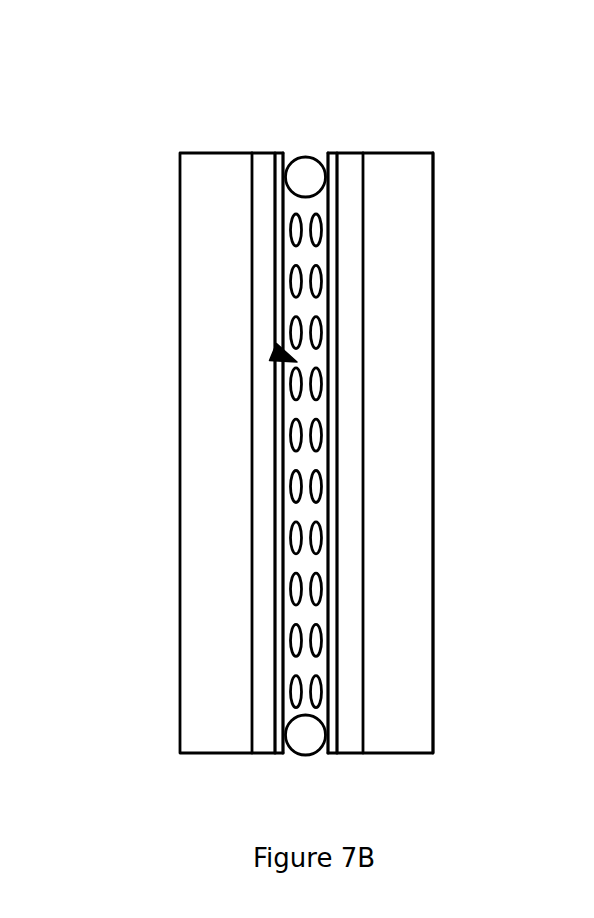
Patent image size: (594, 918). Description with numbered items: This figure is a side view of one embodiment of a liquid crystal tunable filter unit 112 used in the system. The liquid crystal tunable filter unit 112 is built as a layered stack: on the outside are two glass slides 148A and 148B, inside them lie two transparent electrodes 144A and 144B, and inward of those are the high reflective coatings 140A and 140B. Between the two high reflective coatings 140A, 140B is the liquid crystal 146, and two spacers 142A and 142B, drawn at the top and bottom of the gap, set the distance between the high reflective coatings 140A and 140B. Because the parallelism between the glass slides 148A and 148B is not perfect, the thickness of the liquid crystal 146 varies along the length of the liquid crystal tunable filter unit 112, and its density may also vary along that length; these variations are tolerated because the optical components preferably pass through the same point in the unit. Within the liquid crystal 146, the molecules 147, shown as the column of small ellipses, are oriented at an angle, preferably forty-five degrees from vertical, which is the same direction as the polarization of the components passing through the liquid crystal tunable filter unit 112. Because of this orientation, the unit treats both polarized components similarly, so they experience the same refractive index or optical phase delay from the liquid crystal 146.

The liquid crystal tunable filter unit 112 is at (331, 63).
The high reflective coating 140A is at (280, 155).
The high reflective coating 140B is at (333, 756).
The spacer 142A is at (307, 156).
The spacer 142B is at (307, 756).
The transparent electrode 144A is at (251, 275).
The transparent electrode 144B is at (364, 297).
The liquid crystal 146 is at (275, 353).
The molecules 147 is at (314, 364).
The glass slide 148A is at (179, 688).
The glass slide 148B is at (434, 652).